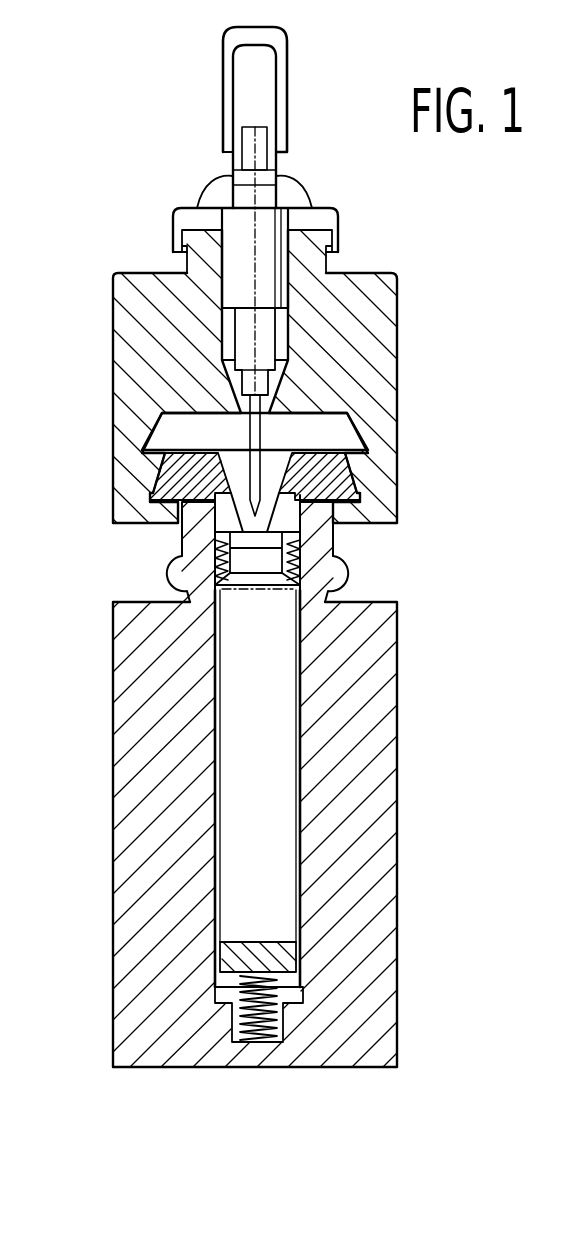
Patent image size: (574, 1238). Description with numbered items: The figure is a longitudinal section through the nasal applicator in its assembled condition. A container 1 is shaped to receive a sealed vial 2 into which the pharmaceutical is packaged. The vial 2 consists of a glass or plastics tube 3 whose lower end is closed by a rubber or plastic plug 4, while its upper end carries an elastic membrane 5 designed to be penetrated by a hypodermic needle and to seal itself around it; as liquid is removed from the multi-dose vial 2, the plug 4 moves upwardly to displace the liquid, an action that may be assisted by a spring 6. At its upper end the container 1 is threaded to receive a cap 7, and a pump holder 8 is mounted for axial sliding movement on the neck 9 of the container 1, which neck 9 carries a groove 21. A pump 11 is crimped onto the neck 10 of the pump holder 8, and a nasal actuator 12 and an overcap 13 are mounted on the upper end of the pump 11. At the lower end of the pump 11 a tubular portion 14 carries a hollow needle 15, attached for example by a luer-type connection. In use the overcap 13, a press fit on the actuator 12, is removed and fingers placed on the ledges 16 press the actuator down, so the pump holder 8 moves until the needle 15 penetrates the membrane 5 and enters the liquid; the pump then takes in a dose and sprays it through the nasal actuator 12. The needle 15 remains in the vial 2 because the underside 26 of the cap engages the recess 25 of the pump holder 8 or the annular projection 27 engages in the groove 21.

The container 1 is at (147, 880).
The vial 2 is at (280, 828).
The tube 3 is at (212, 693).
The plug 4 is at (290, 955).
The membrane 5 is at (253, 538).
The spring 6 is at (237, 1020).
The cap 7 is at (317, 462).
The pump holder 8 is at (397, 330).
The neck 9 is at (345, 552).
The neck 10 is at (316, 262).
The pump 11 is at (245, 260).
The nasal actuator 12 is at (338, 217).
The overcap 13 is at (223, 36).
The tubular portion 14 is at (245, 338).
The hollow needle 15 is at (255, 433).
The ledges 16 is at (314, 208).
The groove 21 is at (180, 580).
The recess 25 is at (150, 455).
The underside 26 is at (345, 502).
The annular projection 27 is at (343, 527).